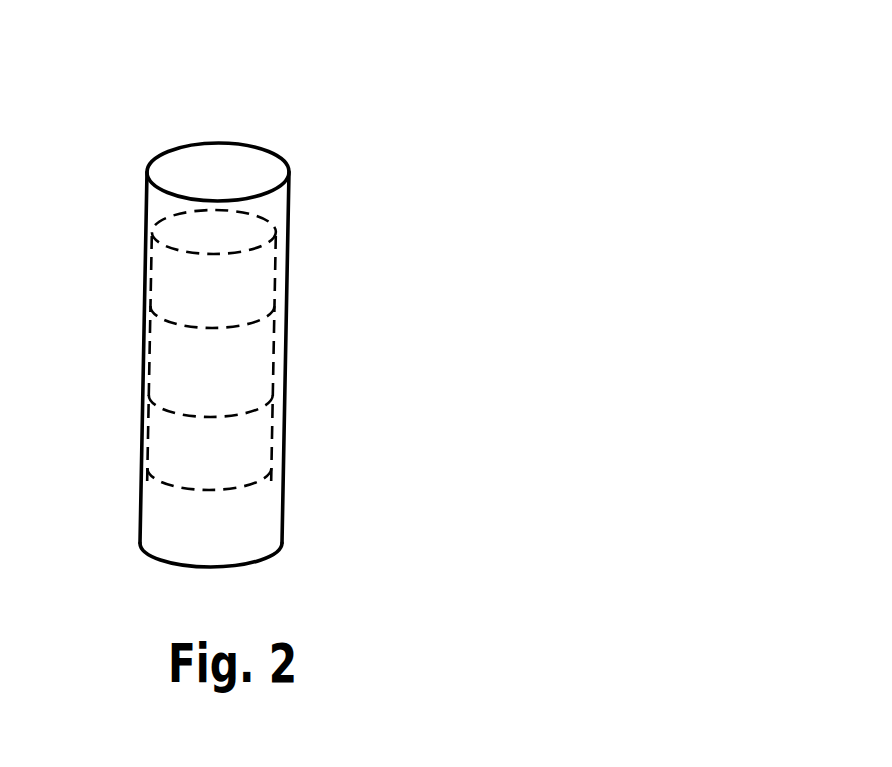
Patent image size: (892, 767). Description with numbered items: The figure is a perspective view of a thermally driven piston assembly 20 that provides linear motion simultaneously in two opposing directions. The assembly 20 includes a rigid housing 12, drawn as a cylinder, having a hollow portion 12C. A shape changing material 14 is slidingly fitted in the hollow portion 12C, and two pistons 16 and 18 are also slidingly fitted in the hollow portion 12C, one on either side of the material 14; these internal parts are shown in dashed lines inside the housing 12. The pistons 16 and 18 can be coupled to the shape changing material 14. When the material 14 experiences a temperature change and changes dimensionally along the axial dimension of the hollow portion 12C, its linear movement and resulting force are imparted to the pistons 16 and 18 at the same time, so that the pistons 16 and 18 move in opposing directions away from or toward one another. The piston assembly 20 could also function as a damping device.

The rigid housing 12 is at (168, 369).
The hollow portion 12C is at (171, 146).
The shape changing material 14 is at (159, 368).
The piston 16 is at (160, 275).
The piston 18 is at (158, 462).
The thermally driven piston assembly 20 is at (496, 57).